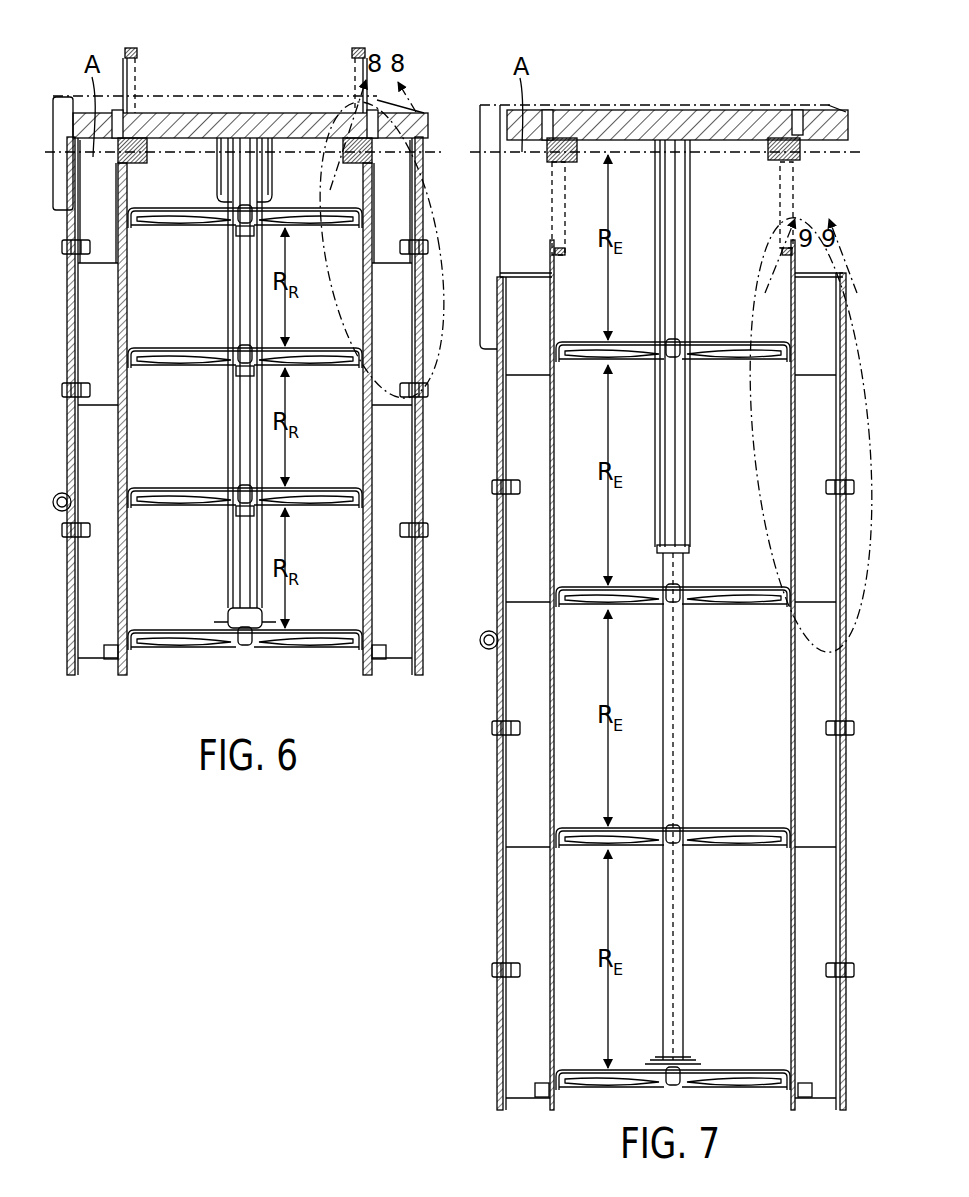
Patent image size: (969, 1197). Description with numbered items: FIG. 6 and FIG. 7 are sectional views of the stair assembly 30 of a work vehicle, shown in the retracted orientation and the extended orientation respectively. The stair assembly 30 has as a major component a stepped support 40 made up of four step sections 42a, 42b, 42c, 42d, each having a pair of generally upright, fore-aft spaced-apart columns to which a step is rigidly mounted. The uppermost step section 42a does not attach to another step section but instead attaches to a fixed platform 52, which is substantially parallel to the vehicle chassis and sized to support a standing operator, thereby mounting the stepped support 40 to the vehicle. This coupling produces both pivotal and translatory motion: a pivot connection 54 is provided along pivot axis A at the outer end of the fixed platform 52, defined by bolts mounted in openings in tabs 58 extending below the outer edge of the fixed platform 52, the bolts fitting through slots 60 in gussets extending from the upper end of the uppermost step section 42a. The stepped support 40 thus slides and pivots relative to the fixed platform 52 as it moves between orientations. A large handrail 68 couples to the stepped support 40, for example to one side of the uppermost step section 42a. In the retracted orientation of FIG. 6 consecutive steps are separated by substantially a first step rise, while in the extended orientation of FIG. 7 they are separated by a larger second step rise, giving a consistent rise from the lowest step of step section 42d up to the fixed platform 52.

In FIG. 6, the stair assembly 30 is at (246, 36).
In FIG. 7, the stair assembly 30 is at (679, 56).
In FIG. 6, the stepped support 40 is at (65, 556).
In FIG. 7, the stepped support 40 is at (482, 942).
In FIG. 6, the uppermost step section 42a is at (178, 226).
In FIG. 7, the uppermost step section 42a is at (713, 339).
In FIG. 6, the step section 42b is at (187, 366).
In FIG. 7, the step section 42b is at (704, 584).
In FIG. 6, the step section 42c is at (187, 508).
In FIG. 7, the step section 42c is at (711, 824).
In FIG. 6, the step section 42d is at (178, 644).
In FIG. 7, the step section 42d is at (734, 1066).
In FIG. 6, the fixed platform 52 is at (197, 120).
In FIG. 7, the fixed platform 52 is at (635, 123).
In FIG. 6, the pivot connection 54 is at (123, 155).
In FIG. 7, the pivot connection 54 is at (545, 157).
In FIG. 6, the tabs 58 is at (142, 160).
In FIG. 7, the tabs 58 is at (570, 162).
In FIG. 6, the slots 60 is at (137, 67).
In FIG. 7, the slots 60 is at (557, 195).
In FIG. 6, the handrail 68 is at (58, 493).
In FIG. 7, the handrail 68 is at (480, 643).